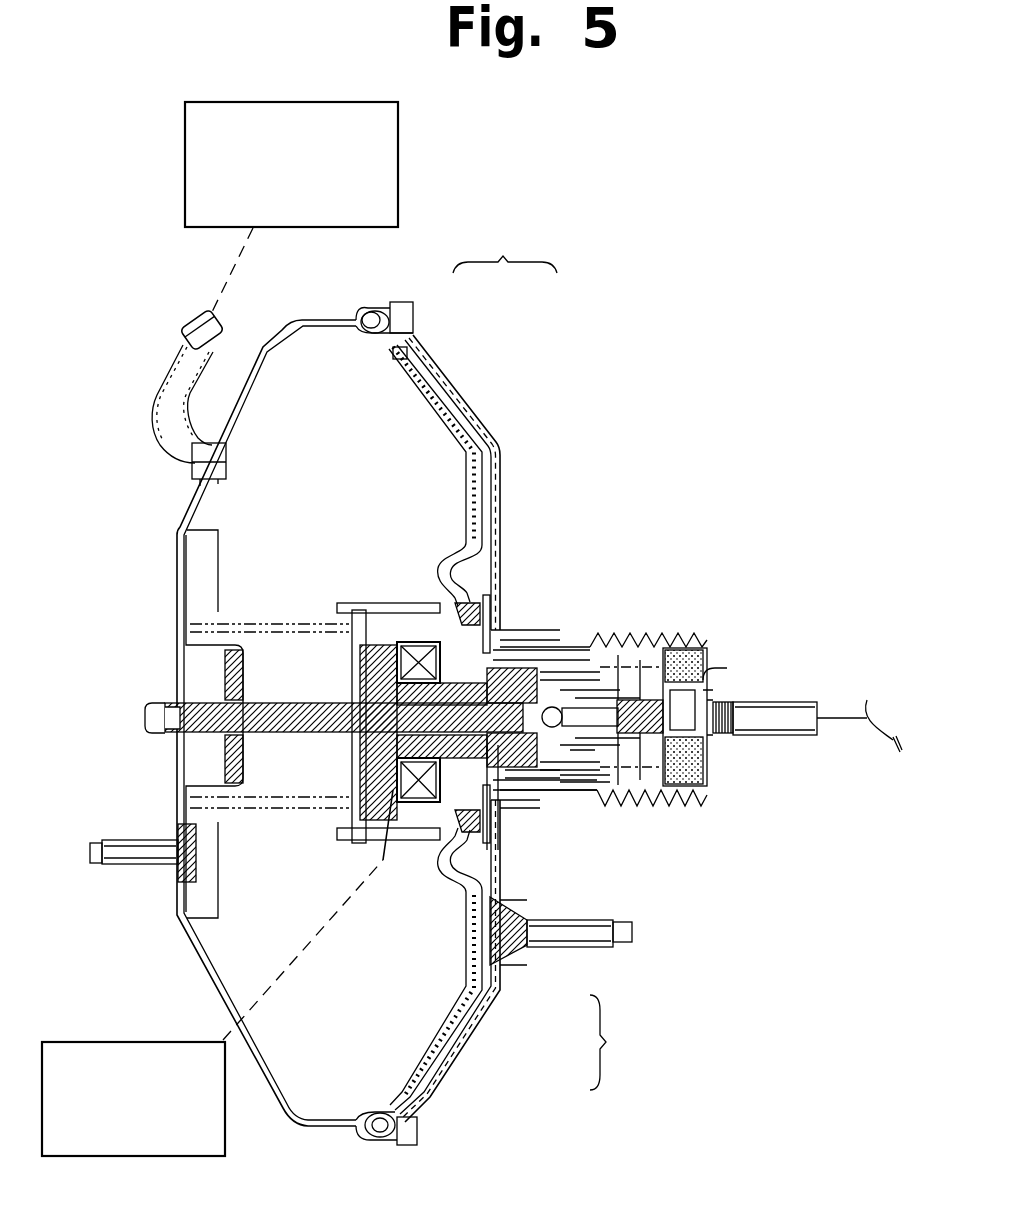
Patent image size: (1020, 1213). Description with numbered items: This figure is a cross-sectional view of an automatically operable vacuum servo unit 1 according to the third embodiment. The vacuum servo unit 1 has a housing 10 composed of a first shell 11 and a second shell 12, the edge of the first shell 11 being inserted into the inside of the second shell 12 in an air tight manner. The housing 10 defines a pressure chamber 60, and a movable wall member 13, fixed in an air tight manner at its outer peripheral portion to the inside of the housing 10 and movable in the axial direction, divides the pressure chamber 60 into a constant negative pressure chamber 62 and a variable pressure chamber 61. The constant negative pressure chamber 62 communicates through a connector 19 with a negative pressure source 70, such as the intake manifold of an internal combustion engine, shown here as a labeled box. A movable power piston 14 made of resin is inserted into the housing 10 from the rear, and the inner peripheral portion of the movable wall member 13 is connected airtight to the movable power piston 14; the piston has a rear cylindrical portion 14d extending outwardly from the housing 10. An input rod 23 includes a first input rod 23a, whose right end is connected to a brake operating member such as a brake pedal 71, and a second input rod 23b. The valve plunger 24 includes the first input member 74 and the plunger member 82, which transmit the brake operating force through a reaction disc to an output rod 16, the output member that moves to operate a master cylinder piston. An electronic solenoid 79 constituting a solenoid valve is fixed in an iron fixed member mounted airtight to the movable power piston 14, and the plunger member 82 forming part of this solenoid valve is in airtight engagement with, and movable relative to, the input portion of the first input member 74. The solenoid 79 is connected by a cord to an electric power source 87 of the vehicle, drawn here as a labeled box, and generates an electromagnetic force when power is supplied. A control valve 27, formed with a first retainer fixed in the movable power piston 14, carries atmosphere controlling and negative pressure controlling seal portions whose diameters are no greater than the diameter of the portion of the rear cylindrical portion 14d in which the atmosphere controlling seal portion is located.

The vacuum servo unit 1 is at (551, 463).
The housing 10 is at (505, 237).
The first shell 11 is at (453, 393).
The second shell 12 is at (340, 316).
The movable wall member 13 is at (440, 418).
The movable power piston 14 is at (518, 640).
The rear cylindrical portion 14d is at (635, 800).
The output rod 16 is at (300, 708).
The connector 19 is at (153, 415).
The input rod 23 is at (733, 692).
The first input rod 23a is at (775, 725).
The second input rod 23b is at (625, 675).
The valve plunger 24 is at (522, 790).
The control valve 27 is at (582, 797).
The pressure chamber 60 is at (621, 1042).
The variable pressure chamber 61 is at (503, 967).
The constant negative pressure chamber 62 is at (428, 1007).
The negative pressure source 70 is at (398, 175).
The brake pedal 71 is at (868, 700).
The first input member 74 is at (437, 803).
The electronic solenoid 79 is at (418, 660).
The plunger member 82 is at (545, 652).
The electric power source 87 is at (130, 1040).